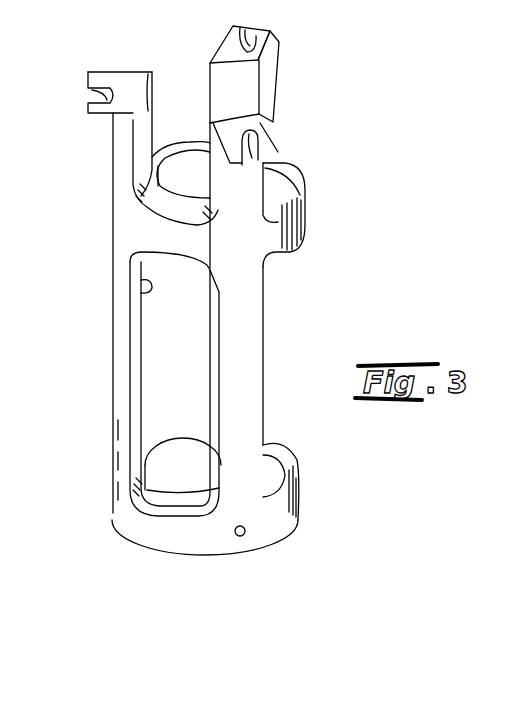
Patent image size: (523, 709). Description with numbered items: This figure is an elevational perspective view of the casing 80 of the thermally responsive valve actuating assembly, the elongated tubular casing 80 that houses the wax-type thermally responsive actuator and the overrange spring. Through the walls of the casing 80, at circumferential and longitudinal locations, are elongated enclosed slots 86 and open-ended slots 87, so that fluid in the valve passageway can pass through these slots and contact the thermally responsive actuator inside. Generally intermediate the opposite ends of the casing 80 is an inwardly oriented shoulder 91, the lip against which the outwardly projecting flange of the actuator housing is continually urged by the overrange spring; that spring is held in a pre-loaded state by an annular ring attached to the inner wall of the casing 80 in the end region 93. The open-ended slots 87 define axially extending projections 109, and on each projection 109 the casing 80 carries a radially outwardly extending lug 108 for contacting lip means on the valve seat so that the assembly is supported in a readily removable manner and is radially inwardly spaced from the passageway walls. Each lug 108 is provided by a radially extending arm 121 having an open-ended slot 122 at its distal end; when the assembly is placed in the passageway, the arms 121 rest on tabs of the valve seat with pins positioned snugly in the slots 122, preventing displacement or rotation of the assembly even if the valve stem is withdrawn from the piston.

The casing 80 is at (250, 303).
The enclosed slot 86 is at (198, 391).
The open-ended slot 87 is at (142, 155).
The shoulder 91 is at (143, 292).
The end region 93 is at (133, 476).
The lug 108 is at (125, 67).
The axially extending projection 109 is at (253, 183).
The arm 121 is at (110, 72).
The open-ended slot 122 is at (258, 42).